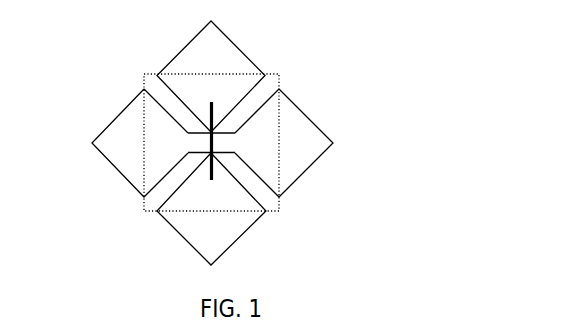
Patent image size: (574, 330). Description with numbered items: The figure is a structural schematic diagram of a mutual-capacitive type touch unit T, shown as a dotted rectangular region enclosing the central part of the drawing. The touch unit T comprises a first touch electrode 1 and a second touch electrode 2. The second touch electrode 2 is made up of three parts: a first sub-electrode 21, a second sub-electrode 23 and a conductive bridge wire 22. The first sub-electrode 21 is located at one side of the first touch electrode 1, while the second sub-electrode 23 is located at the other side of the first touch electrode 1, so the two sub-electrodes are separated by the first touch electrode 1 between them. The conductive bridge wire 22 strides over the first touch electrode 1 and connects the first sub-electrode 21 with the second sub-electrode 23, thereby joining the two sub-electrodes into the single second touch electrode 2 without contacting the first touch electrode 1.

The first touch electrode 1 is at (170, 153).
The second touch electrode 2 is at (291, 142).
The first sub-electrode 21 is at (224, 91).
The conductive bridge wire 22 is at (214, 141).
The second sub-electrode 23 is at (270, 209).
The touch unit T is at (144, 79).